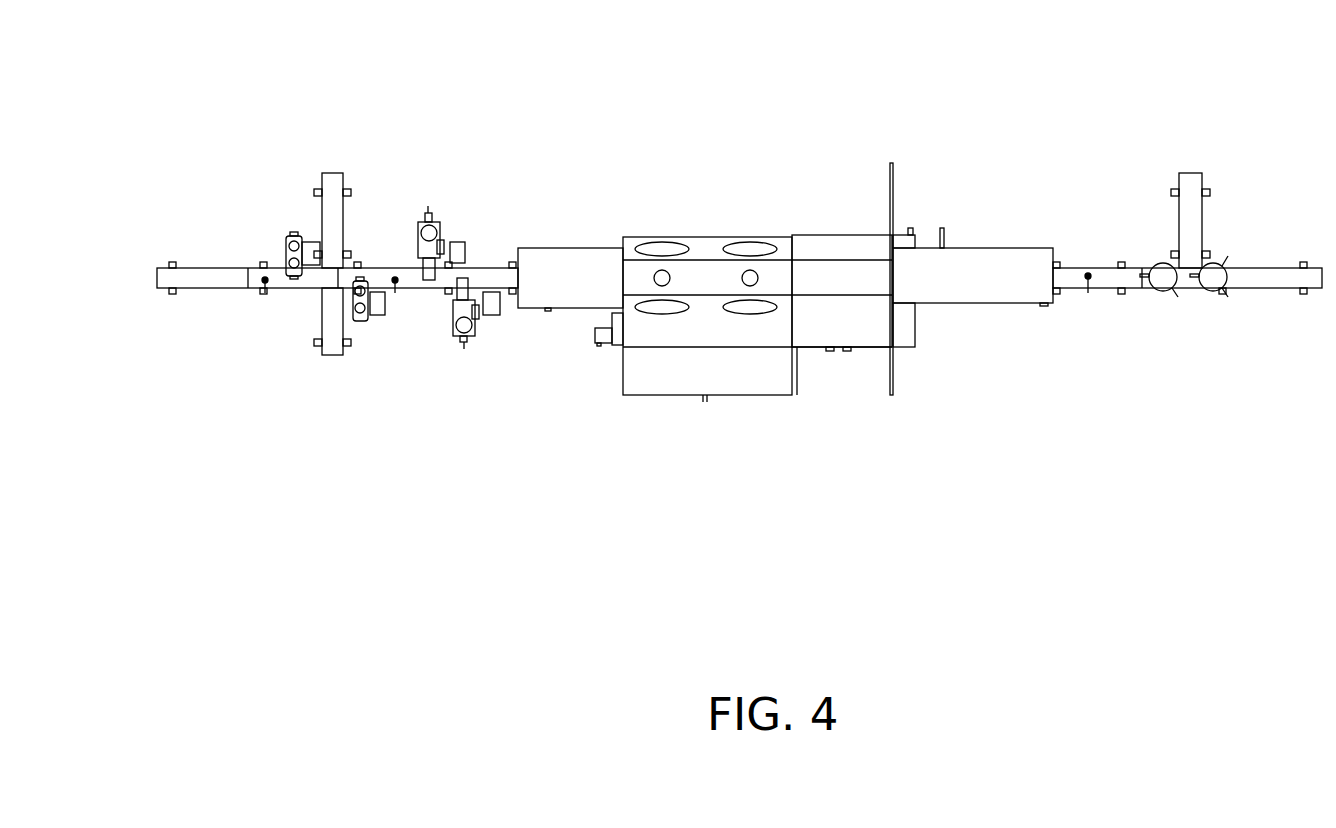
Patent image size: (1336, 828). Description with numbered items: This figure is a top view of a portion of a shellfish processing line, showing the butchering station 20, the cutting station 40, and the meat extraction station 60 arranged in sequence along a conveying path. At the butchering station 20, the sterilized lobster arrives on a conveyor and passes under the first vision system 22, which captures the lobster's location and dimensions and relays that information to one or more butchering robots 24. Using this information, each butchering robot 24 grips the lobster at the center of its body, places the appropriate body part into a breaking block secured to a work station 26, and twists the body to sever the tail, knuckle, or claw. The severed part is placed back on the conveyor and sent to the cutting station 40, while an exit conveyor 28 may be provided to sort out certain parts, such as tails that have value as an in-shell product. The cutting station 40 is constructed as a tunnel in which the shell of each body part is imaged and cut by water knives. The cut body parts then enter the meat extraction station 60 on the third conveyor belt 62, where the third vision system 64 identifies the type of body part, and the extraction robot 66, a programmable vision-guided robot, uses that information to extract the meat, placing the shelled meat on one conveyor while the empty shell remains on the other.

The butchering station 20 is at (198, 187).
The first vision system 22 is at (258, 276).
The butchering robot 24 is at (292, 232).
The work station 26 is at (312, 245).
The exit conveyor 28 is at (335, 178).
The cutting station 40 is at (746, 192).
The meat extraction station 60 is at (1194, 138).
The third conveyor belt 62 is at (1282, 283).
The third vision system 64 is at (1103, 282).
The extraction robot 66 is at (1208, 291).